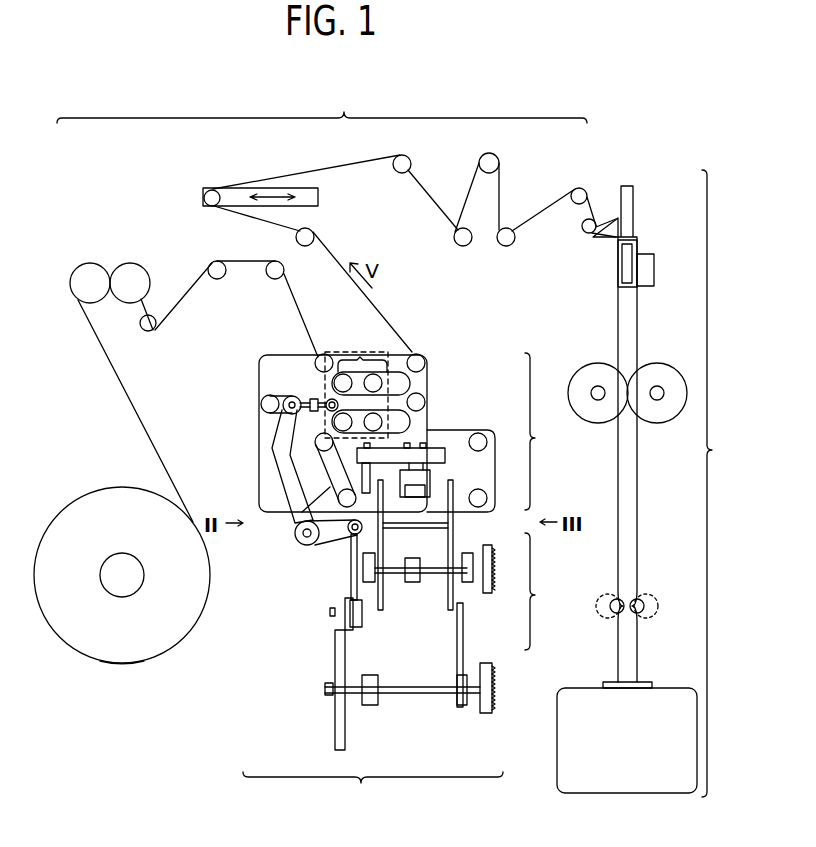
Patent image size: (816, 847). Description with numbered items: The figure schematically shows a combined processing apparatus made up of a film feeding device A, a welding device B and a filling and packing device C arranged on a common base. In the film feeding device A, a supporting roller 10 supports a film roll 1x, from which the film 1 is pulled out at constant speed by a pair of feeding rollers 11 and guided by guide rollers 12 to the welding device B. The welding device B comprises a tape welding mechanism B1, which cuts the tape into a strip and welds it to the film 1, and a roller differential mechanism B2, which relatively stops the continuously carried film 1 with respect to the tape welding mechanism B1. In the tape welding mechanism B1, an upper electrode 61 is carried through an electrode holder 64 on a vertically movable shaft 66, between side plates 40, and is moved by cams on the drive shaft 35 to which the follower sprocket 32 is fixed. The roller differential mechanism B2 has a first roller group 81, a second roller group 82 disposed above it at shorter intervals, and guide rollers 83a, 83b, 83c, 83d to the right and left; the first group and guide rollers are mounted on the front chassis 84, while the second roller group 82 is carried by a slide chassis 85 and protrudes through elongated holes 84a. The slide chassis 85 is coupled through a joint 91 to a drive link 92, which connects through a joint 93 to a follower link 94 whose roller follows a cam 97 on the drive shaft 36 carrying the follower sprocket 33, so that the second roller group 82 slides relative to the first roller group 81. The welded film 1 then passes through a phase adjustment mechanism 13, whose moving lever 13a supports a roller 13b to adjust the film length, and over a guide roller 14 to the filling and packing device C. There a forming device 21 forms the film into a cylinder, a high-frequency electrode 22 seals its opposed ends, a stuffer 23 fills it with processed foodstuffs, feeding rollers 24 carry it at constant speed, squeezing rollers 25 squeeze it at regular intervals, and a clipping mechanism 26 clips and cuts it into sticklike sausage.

The film 1 is at (134, 407).
The supporting roller 10 is at (117, 560).
The film roll 1x is at (112, 645).
The feeding rollers 11 is at (112, 275).
The guide rollers 12 is at (271, 280).
The phase adjustment mechanism 13 is at (240, 176).
The moving lever 13a is at (318, 194).
The roller 13b is at (204, 197).
The guide roller 14 is at (500, 248).
The forming device 21 is at (608, 238).
The high-frequency electrode 22 is at (656, 268).
The stuffer 23 is at (634, 206).
The feeding rollers 24 is at (600, 418).
The squeezing rollers 25 is at (612, 612).
The clipping mechanism 26 is at (660, 692).
The follower sprocket 32 is at (495, 575).
The follower sprocket 33 is at (495, 700).
The drive shaft 35 is at (400, 568).
The drive shaft 36 is at (415, 690).
The side plates 40 is at (450, 592).
The upper electrode 61 is at (455, 523).
The electrode holder 64 is at (445, 455).
The vertically movable shaft 66 is at (362, 478).
The first roller group 81 is at (496, 465).
The second roller group 82 is at (356, 383).
The guide roller 83a is at (320, 352).
The guide roller 83b is at (262, 410).
The guide roller 83c is at (425, 360).
The guide roller 83d is at (425, 402).
The front chassis 84 is at (270, 372).
The elongated holes 84a is at (405, 383).
The slide chassis 85 is at (392, 356).
The joint 91 is at (290, 395).
The drive link 92 is at (285, 478).
The joint 93 is at (350, 575).
The follower link 94 is at (340, 652).
The cam 97 is at (335, 724).
The film feeding device A is at (322, 104).
The welding device B is at (373, 794).
The tape welding mechanism B1 is at (544, 591).
The roller differential mechanism B2 is at (544, 431).
The filling and packing device C is at (715, 483).